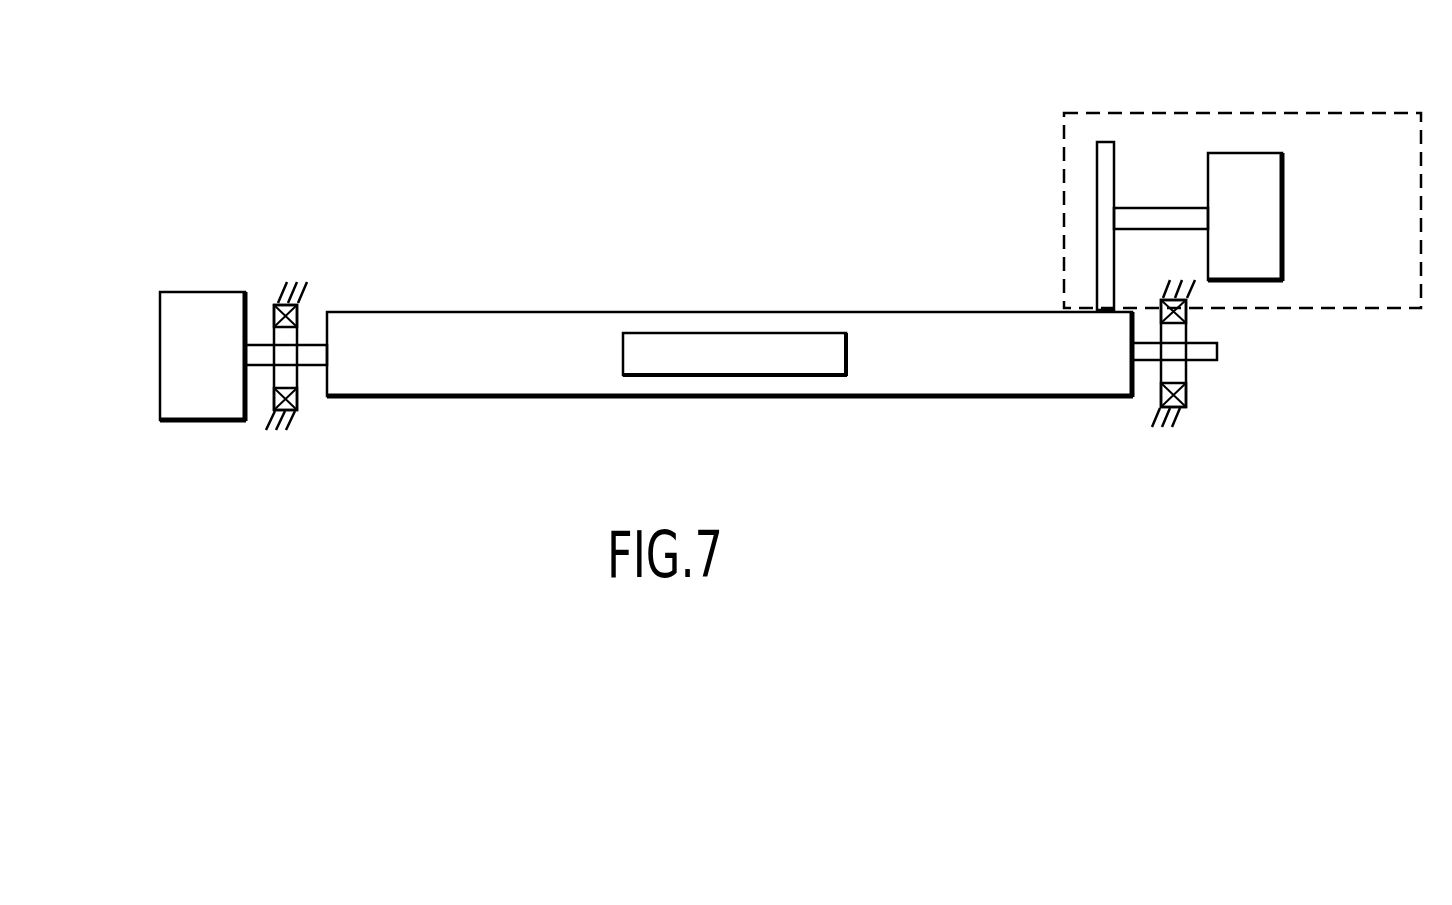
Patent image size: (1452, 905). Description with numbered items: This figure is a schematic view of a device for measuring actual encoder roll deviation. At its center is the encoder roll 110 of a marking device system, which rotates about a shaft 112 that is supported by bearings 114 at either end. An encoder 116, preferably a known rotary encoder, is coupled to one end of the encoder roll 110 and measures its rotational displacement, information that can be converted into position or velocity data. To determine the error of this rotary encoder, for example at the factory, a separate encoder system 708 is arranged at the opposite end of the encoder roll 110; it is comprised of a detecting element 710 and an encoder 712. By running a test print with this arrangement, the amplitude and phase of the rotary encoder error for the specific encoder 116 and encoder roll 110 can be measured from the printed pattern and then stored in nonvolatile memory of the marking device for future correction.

The encoder roll 110 is at (405, 312).
The shaft 112 is at (1217, 347).
The bearings 114 is at (297, 398).
The encoder 116 is at (212, 291).
The separate encoder system 708 is at (1265, 113).
The detecting element 710 is at (1097, 182).
The encoder 712 is at (1283, 185).